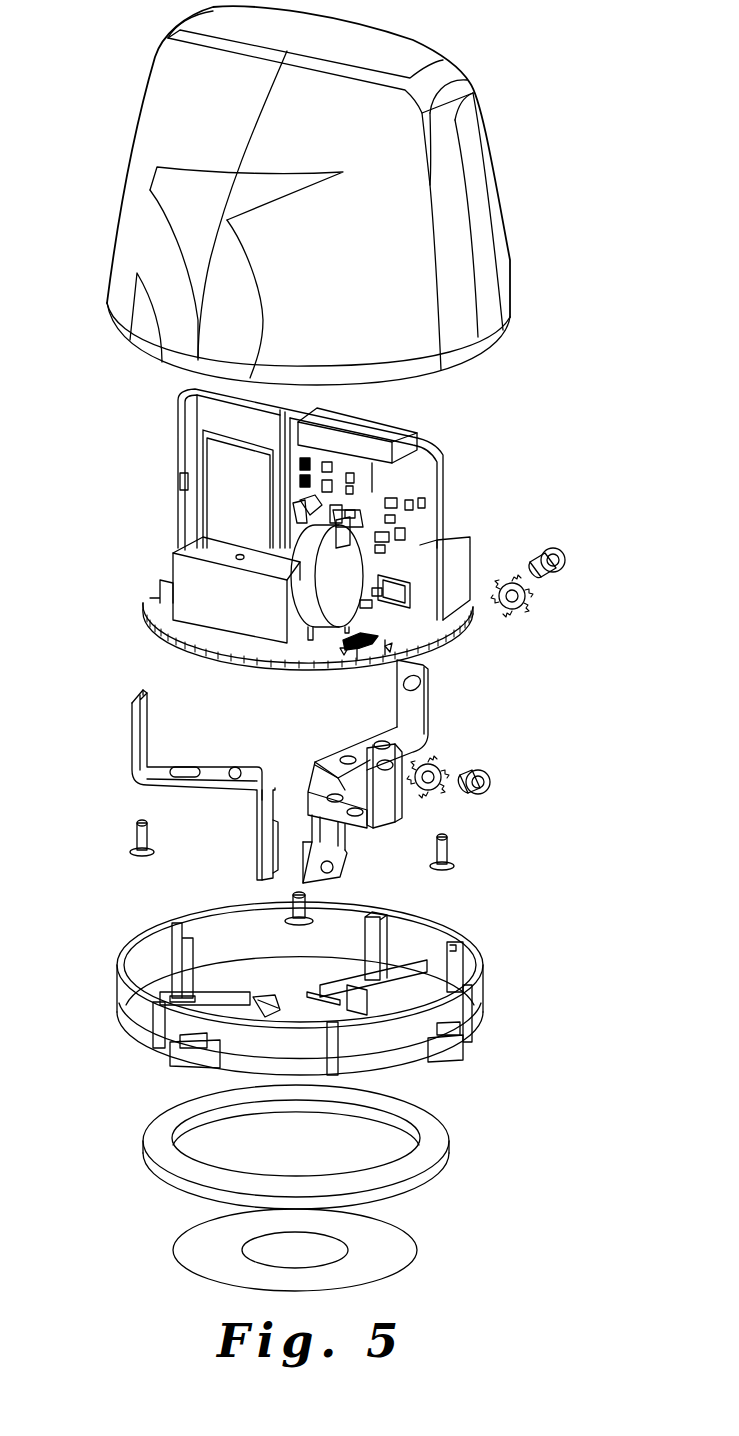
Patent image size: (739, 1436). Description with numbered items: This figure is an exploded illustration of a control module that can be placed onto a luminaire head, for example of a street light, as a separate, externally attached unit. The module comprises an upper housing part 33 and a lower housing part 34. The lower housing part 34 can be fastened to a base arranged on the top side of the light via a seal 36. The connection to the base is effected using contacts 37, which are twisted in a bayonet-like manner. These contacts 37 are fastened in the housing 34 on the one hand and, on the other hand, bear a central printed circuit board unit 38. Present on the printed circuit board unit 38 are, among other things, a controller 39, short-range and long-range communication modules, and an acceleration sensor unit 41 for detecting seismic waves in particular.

The upper housing part 33 is at (475, 140).
The lower housing part 34 is at (428, 950).
The seal 36 is at (437, 1143).
The contacts 37 is at (413, 705).
The printed circuit board unit 38 is at (311, 524).
The controller 39 is at (253, 500).
The acceleration sensor unit 41 is at (400, 430).